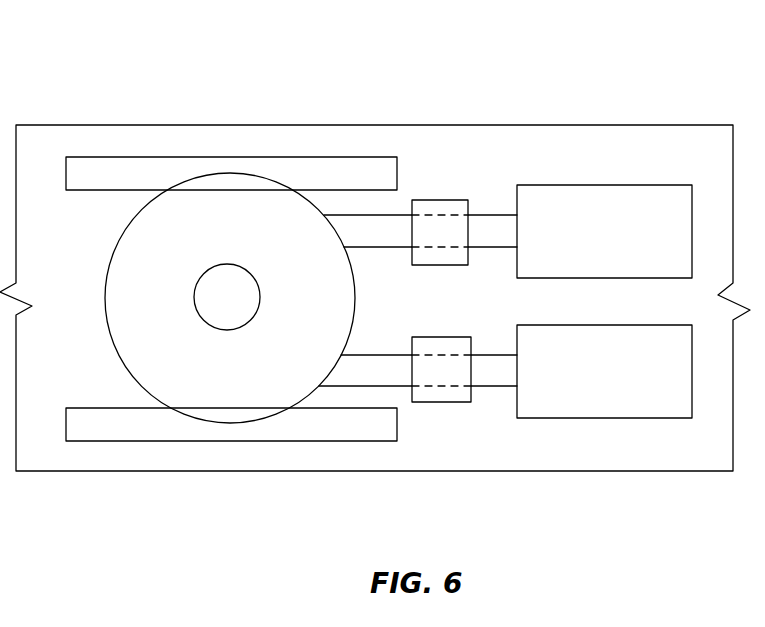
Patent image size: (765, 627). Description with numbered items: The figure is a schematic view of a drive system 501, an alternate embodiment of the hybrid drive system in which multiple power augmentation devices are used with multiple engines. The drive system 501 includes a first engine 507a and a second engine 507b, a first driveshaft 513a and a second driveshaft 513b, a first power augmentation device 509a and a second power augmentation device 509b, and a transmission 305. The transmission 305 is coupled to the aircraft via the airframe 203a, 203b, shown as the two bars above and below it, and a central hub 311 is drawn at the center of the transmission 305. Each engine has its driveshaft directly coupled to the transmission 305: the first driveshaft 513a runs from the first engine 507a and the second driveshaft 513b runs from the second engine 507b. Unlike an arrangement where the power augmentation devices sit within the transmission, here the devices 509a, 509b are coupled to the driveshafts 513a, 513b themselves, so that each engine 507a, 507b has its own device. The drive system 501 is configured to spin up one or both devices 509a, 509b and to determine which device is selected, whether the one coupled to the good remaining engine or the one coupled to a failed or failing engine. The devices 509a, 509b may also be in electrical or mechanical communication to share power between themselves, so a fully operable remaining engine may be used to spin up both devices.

The drive system 501 is at (124, 86).
The airframe 203a is at (221, 441).
The airframe 203b is at (197, 157).
The transmission 305 is at (112, 250).
The hub 311 is at (194, 307).
The first power augmentation device 509a is at (430, 402).
The second power augmentation device 509b is at (427, 200).
The first driveshaft 513a is at (490, 388).
The second driveshaft 513b is at (483, 215).
The first engine 507a is at (647, 418).
The second engine 507b is at (624, 185).